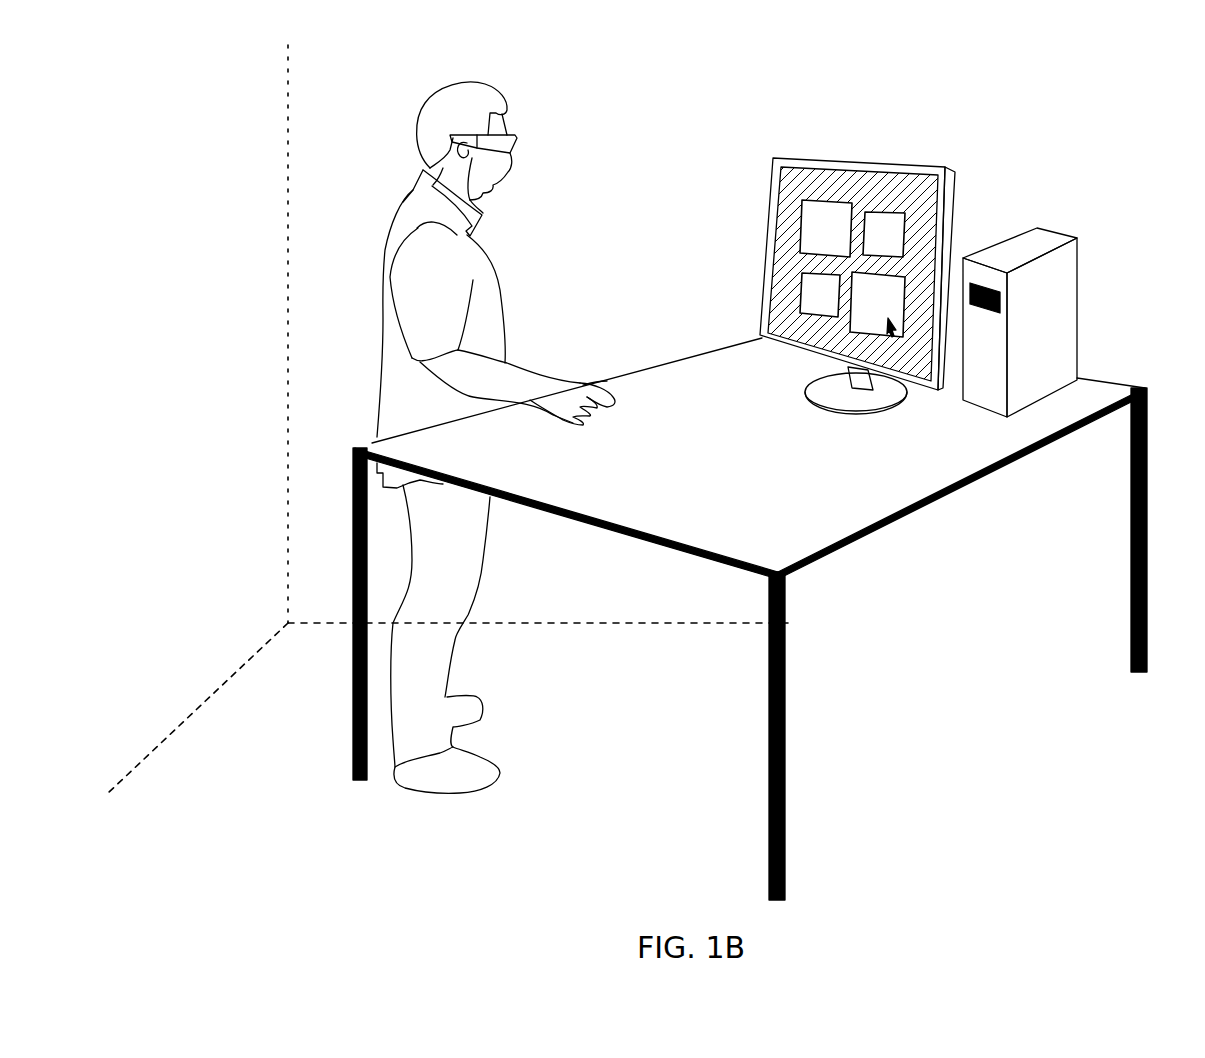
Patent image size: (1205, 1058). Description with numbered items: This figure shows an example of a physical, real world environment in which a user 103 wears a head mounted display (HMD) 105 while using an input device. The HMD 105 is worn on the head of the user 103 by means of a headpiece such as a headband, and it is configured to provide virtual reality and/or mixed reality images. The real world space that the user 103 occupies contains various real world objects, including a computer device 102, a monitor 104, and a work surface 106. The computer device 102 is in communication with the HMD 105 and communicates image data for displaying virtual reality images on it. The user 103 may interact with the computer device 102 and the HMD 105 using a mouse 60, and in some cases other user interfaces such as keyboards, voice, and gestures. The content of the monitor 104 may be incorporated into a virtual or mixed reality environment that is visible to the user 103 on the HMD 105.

The mouse 60 is at (617, 403).
The computer device 102 is at (1080, 258).
The user 103 is at (390, 236).
The monitor 104 is at (956, 192).
The head mounted display 105 is at (512, 143).
The work surface 106 is at (1092, 393).